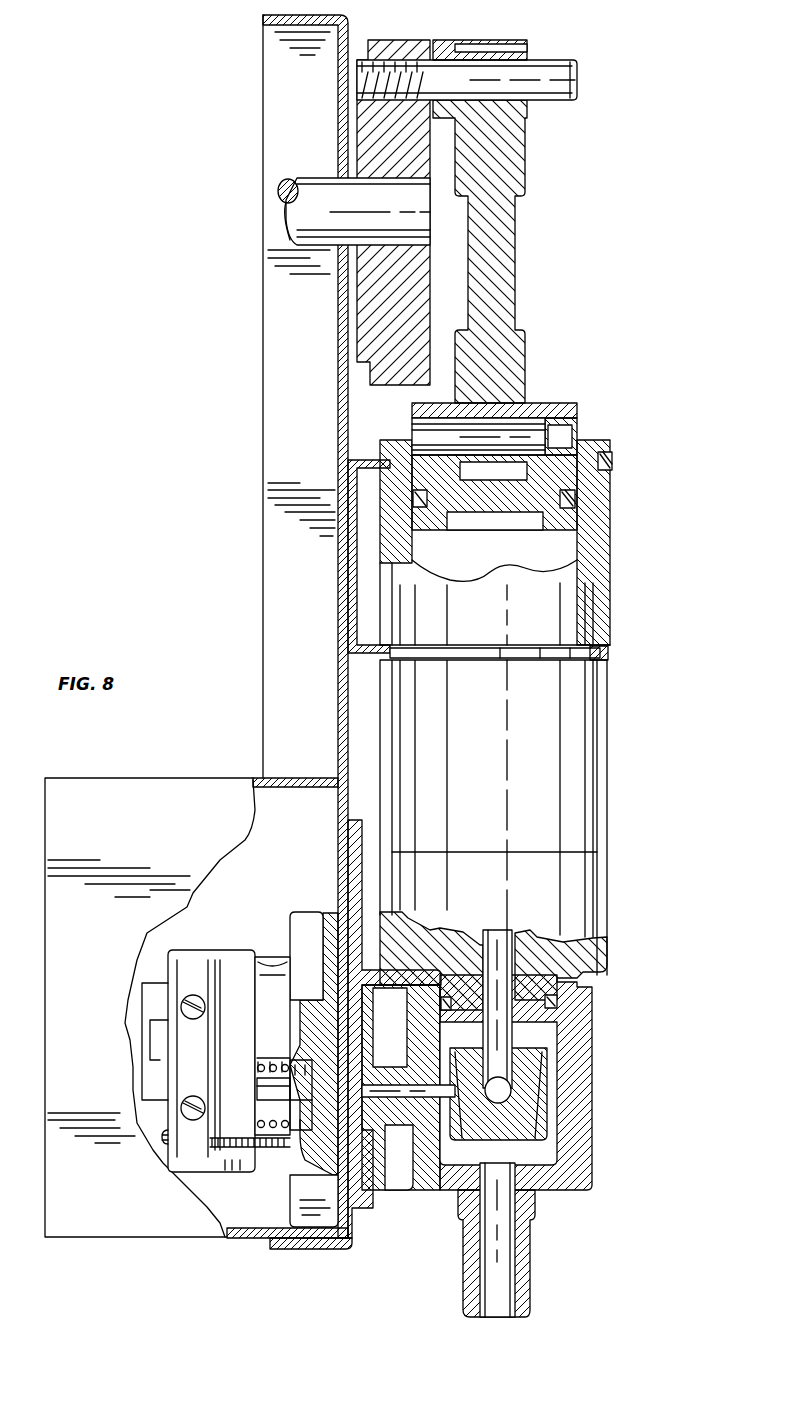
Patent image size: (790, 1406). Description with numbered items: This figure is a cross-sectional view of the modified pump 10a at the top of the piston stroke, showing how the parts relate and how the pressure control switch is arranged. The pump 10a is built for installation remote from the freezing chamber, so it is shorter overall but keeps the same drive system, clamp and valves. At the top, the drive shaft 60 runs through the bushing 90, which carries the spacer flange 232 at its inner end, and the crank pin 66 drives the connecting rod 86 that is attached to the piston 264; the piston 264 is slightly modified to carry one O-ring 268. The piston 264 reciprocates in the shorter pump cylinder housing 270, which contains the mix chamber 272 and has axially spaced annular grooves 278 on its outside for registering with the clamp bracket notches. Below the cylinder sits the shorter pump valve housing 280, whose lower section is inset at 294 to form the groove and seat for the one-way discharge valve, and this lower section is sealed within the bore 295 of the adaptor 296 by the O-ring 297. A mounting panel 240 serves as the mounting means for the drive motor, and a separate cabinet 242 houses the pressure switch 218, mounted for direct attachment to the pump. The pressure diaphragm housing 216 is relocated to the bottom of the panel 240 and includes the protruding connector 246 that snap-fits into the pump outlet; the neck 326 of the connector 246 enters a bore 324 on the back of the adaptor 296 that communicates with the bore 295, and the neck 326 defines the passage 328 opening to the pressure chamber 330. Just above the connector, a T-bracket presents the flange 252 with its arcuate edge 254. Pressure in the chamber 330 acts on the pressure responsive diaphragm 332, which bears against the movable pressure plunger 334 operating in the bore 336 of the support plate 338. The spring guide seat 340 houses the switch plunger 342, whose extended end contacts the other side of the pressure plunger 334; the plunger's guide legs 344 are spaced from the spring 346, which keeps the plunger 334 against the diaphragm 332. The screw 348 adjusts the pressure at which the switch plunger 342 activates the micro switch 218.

The modified pump 10a is at (614, 792).
The drive shaft 60 is at (293, 243).
The crank pin 66 is at (563, 100).
The connecting rod 86 is at (520, 275).
The bushing 90 is at (528, 52).
The pressure diaphragm housing 216 is at (358, 1222).
The pressure switch 218 is at (182, 950).
The spacer flange 232 is at (436, 42).
The mounting panel 240 is at (346, 28).
The cabinet 242 is at (112, 778).
The connector 246 is at (392, 1150).
The flange 252 is at (438, 945).
The arcuate edge 254 is at (490, 935).
The piston 264 is at (577, 442).
The O-ring 268 is at (578, 502).
The pump cylinder housing 270 is at (608, 740).
The mix chamber 272 is at (560, 553).
The annular grooves 278 is at (605, 466).
The pump valve housing 280 is at (608, 926).
The inset 294 is at (568, 1038).
The bore 295 is at (540, 1155).
The adaptor 296 is at (594, 1084).
The O-ring 297 is at (560, 1002).
The bore 324 is at (468, 1036).
The neck 326 is at (426, 1115).
The passage 328 is at (435, 1095).
The pressure chamber 330 is at (380, 1058).
The pressure responsive diaphragm 332 is at (425, 990).
The pressure plunger 334 is at (318, 1065).
The bore 336 is at (302, 1162).
The support plate 338 is at (306, 920).
The spring guide seat 340 is at (268, 1080).
The switch plunger 342 is at (290, 1100).
The guide legs 344 is at (270, 1050).
The spring 346 is at (270, 1060).
The screw 348 is at (165, 1142).